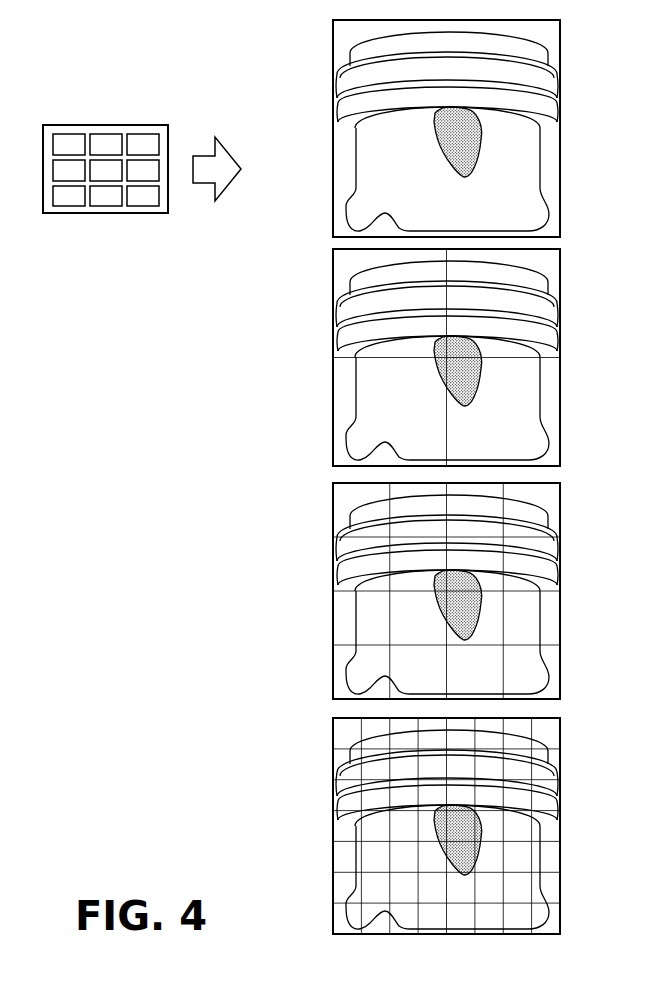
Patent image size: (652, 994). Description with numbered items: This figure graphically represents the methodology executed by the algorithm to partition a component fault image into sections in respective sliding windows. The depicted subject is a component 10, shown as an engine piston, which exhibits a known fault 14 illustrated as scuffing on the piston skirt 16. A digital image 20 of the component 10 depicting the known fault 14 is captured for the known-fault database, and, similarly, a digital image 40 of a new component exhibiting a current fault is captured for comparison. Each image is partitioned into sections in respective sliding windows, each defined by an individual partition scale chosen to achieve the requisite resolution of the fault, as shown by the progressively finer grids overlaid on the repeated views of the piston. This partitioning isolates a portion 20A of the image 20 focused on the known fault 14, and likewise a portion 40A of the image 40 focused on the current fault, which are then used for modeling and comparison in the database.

The component 10 is at (489, 131).
The known fault 14 is at (490, 154).
The piston skirt 16 is at (512, 189).
The digital image 20 is at (437, 127).
The digital image of the current fault 40 is at (289, 98).
The portion of the digital image 20A is at (378, 826).
The portion of the image of the current fault 40A is at (433, 853).